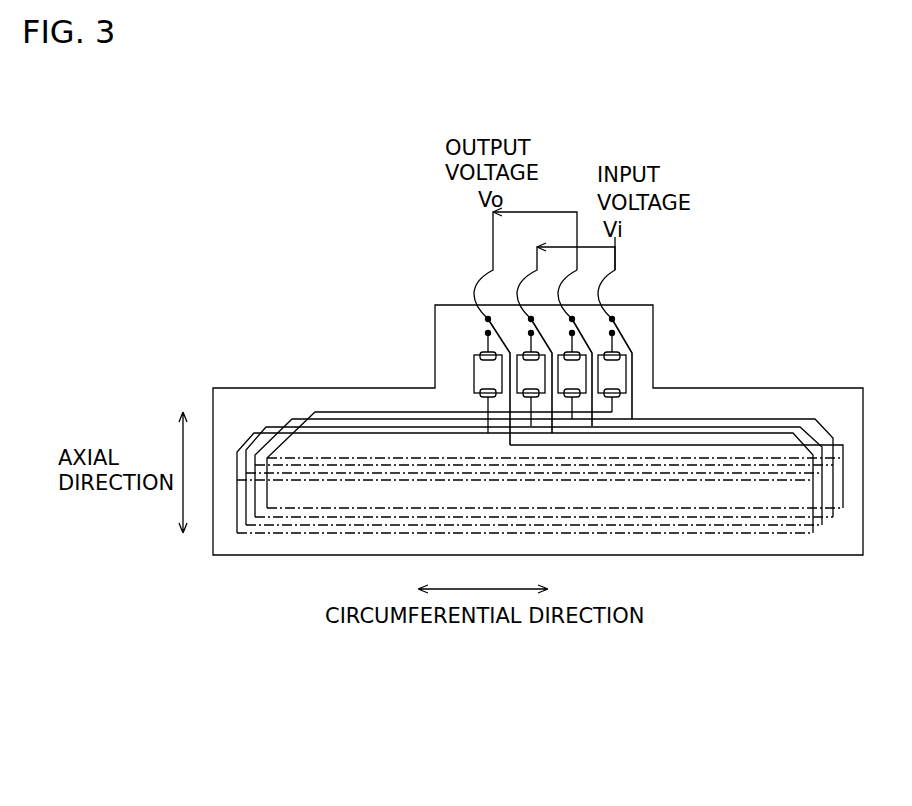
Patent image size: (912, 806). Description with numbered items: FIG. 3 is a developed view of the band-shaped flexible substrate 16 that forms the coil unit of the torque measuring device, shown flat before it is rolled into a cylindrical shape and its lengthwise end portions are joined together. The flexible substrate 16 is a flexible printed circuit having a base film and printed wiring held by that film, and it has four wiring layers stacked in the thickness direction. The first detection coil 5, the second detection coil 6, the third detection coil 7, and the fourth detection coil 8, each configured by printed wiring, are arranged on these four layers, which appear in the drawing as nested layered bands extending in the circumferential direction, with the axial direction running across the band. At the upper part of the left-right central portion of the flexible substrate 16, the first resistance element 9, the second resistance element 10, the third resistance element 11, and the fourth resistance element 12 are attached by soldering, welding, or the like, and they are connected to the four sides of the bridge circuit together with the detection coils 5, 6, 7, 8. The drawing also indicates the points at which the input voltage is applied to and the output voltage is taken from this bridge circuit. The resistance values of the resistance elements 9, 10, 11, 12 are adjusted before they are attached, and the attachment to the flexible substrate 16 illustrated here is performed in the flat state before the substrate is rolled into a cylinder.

The first detection coil 5 is at (672, 535).
The second detection coil 6 is at (695, 527).
The third detection coil 7 is at (740, 518).
The fourth detection coil 8 is at (775, 510).
The first resistance element 9 is at (475, 375).
The second resistance element 10 is at (518, 370).
The third resistance element 11 is at (582, 372).
The fourth resistance element 12 is at (627, 380).
The flexible substrate 16 is at (307, 557).